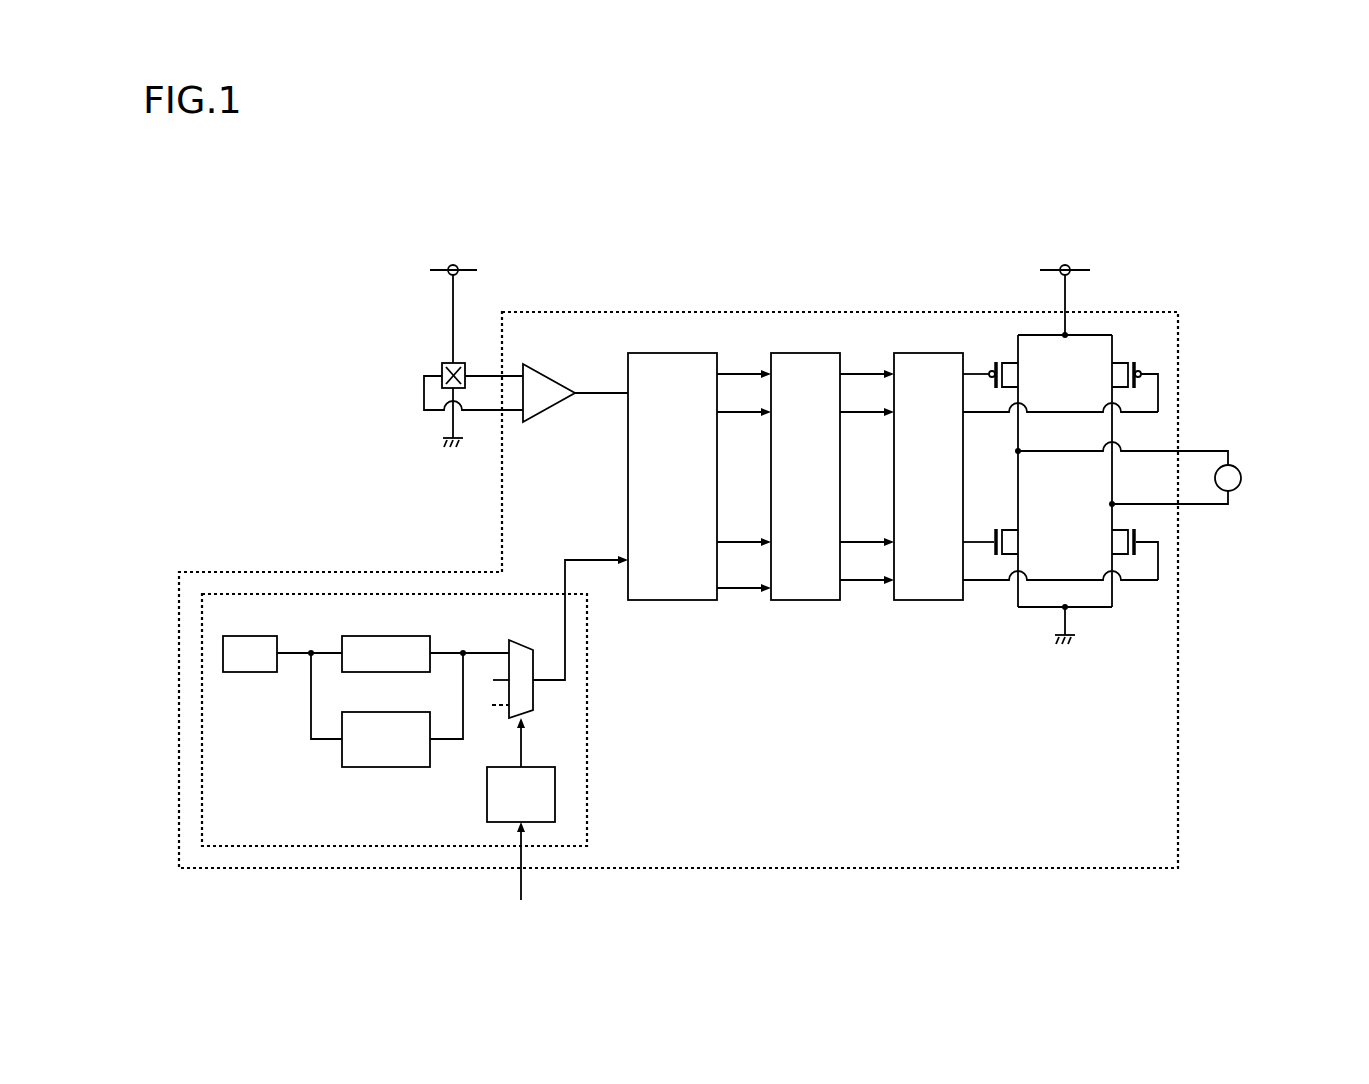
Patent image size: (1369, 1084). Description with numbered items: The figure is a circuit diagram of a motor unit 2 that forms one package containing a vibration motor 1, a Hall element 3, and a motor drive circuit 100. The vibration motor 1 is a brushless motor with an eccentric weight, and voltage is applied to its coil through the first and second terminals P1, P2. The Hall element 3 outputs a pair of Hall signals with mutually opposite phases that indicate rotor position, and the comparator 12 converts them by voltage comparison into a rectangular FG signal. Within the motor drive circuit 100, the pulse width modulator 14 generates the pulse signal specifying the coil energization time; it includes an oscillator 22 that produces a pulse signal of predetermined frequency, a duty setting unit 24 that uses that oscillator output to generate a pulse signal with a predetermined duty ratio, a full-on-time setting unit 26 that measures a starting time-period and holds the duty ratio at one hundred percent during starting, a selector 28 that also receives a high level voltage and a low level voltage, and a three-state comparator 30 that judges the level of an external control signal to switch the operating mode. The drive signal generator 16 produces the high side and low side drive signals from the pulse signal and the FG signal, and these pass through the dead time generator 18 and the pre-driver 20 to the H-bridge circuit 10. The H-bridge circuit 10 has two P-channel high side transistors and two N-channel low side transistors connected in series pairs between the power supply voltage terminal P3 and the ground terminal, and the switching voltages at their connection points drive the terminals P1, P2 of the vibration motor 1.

The vibration motor 1 is at (1241, 480).
The motor unit 2 is at (302, 227).
The Hall element 3 is at (442, 363).
The H-bridge circuit 10 is at (1095, 468).
The comparator 12 is at (548, 407).
The pulse width modulator 14 is at (587, 718).
The drive signal generator 16 is at (684, 353).
The dead time generator 18 is at (812, 353).
The pre-driver 20 is at (934, 353).
The oscillator 22 is at (250, 636).
The duty setting unit 24 is at (384, 636).
The full-on-time setting unit 26 is at (384, 712).
The selector 28 is at (521, 645).
The 3-state comparator 30 is at (487, 795).
The motor drive circuit 100 is at (755, 312).
The first terminal P1 is at (1205, 451).
The second terminal P2 is at (1205, 504).
The power supply voltage terminal P3 is at (1068, 276).